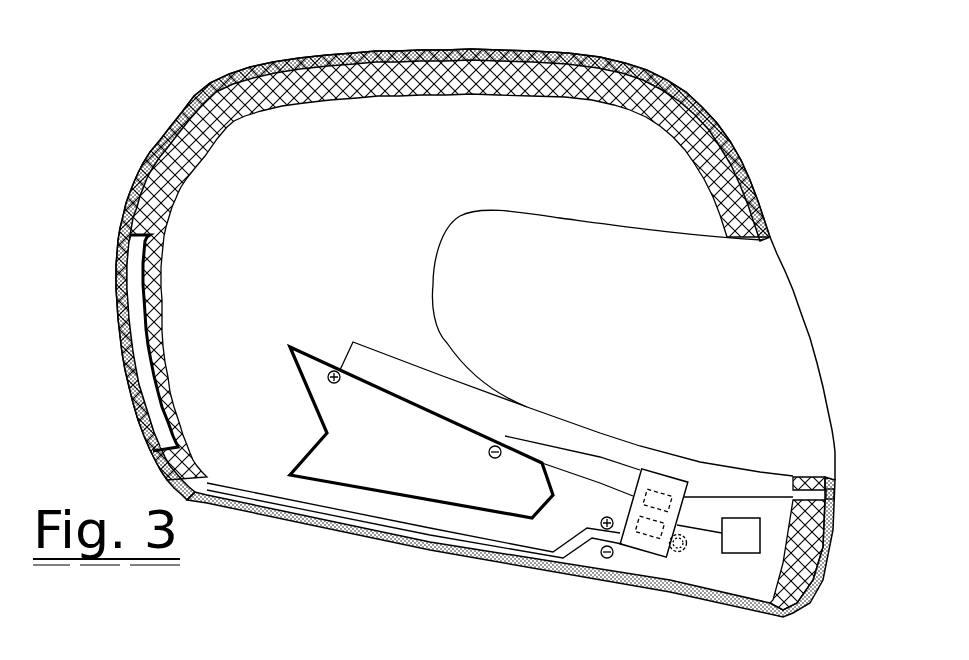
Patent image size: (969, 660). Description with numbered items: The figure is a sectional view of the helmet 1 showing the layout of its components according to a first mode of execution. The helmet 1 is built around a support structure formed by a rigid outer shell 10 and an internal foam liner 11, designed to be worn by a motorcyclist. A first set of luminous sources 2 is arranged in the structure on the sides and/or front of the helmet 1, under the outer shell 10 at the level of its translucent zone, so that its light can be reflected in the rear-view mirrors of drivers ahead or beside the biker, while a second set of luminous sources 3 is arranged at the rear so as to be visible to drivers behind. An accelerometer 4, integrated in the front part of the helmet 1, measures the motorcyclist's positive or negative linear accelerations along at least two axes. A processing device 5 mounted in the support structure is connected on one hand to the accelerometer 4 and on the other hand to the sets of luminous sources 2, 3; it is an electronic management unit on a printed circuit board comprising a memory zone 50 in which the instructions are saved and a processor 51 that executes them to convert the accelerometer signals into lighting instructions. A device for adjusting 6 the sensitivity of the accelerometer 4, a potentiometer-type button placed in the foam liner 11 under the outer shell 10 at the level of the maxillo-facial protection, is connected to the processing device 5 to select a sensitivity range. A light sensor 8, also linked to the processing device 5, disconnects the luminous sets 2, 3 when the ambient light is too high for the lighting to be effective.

The helmet 1 is at (762, 119).
The first set of luminous sources 2 is at (301, 346).
The second set of luminous sources 3 is at (128, 299).
The accelerometer 4 is at (733, 549).
The processing device 5 is at (639, 517).
The device for adjusting the sensitivity 6 is at (680, 552).
The light sensor 8 is at (836, 492).
The outer shell 10 is at (223, 90).
The internal foam liner 11 is at (280, 70).
The memory zone 50 is at (648, 536).
The processor 51 is at (657, 497).